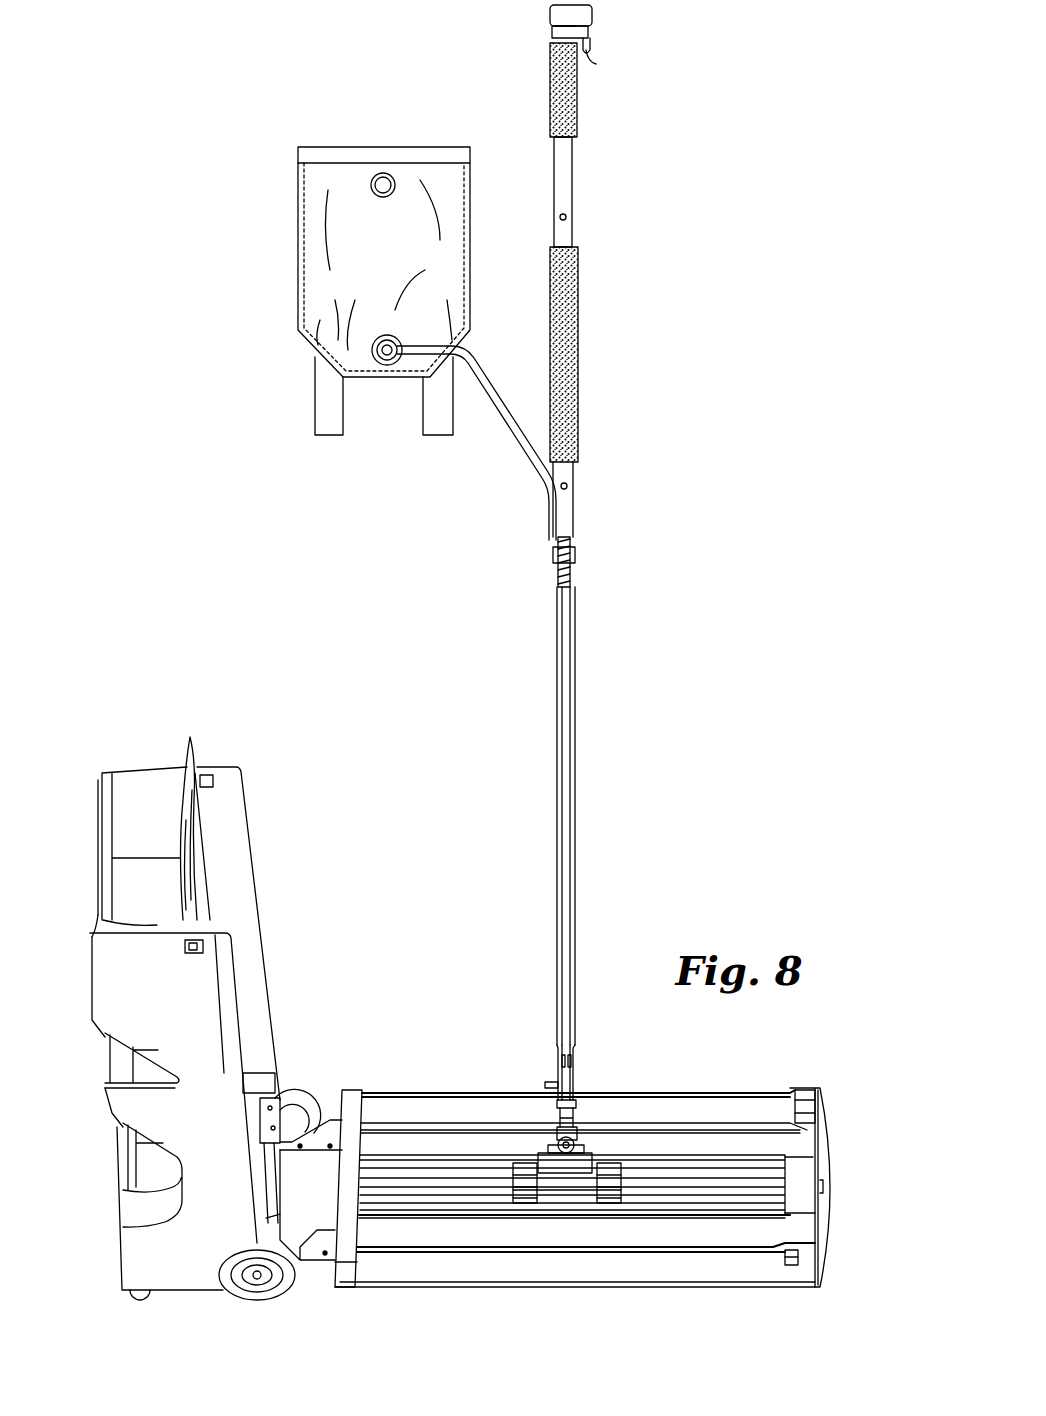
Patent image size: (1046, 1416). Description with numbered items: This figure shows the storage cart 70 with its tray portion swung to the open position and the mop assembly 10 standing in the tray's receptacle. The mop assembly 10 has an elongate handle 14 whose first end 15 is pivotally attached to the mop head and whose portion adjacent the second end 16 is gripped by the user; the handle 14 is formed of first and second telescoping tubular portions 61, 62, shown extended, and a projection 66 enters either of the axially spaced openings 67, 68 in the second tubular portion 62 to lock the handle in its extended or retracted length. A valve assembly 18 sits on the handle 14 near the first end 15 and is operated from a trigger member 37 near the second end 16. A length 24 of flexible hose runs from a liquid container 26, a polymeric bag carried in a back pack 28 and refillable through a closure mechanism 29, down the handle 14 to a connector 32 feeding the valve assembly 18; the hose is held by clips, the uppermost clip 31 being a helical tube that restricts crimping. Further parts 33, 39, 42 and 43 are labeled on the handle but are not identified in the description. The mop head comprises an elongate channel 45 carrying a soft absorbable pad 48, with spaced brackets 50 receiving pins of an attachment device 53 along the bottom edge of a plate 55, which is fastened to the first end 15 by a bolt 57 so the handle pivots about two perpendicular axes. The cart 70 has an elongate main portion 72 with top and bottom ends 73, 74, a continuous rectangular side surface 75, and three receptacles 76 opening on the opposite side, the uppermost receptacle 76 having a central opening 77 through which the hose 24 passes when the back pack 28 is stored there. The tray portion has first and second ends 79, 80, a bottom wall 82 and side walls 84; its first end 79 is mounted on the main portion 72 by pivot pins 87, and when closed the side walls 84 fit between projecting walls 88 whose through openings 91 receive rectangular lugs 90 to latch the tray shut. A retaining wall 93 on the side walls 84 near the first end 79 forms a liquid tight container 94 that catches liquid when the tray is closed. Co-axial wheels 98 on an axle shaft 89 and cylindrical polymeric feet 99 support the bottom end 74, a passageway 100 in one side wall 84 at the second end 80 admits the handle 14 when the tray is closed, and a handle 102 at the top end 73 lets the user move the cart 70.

The mop assembly 10 is at (590, 318).
The elongate handle 14 is at (575, 618).
The first end of handle 15 is at (576, 1048).
The second end of handle 16 is at (570, 118).
The valve assembly 18 is at (560, 1058).
The length of flexible hose 24 is at (545, 484).
The liquid container 26 is at (380, 362).
The back pack 28 is at (315, 275).
The closure mechanism 29 is at (382, 173).
The uppermost clip 31 is at (572, 572).
The connector 32 is at (576, 1100).
The handle cap 33 is at (592, 14).
The trigger member 37 is at (593, 43).
The cap seam 39 is at (556, 26).
The hook 42 is at (598, 65).
The tab 43 is at (548, 1082).
The elongate channel 45 is at (708, 1165).
The soft absorbable pad 48 is at (790, 1207).
The spaced brackets 50 is at (532, 1200).
The attachment device 53 is at (550, 1150).
The plate 55 is at (558, 1160).
The bolt 57 is at (574, 1143).
The first tubular handle portion 61 is at (577, 944).
The second tubular handle portion 62 is at (568, 237).
The projection 66 is at (568, 484).
The opening for extended position 67 is at (566, 490).
The opening for retracted position 68 is at (566, 216).
The storage cart 70 is at (264, 808).
The elongate main portion 72 is at (173, 1088).
The top end of main portion 73 is at (136, 772).
The bottom end of main portion 74 is at (186, 1285).
The side surface 75 is at (200, 855).
The receptacles 76 is at (140, 1170).
The central opening 77 is at (98, 884).
The first end of tray portion 79 is at (352, 1089).
The second end of tray portion 80 is at (822, 1246).
The bottom wall 82 is at (808, 1168).
The side walls 84 is at (755, 1092).
The pivot pins 87 is at (288, 1116).
The projecting walls 88 is at (254, 954).
The axle shaft 89 is at (271, 1186).
The lugs 90 is at (806, 1090).
The through openings 91 is at (206, 774).
The retaining wall 93 is at (345, 1235).
The liquid tight container 94 is at (360, 1262).
The wheels 98 is at (282, 1285).
The cylindrical polymeric feet 99 is at (135, 1298).
The passageway 100 is at (824, 1178).
The handle 102 is at (192, 738).